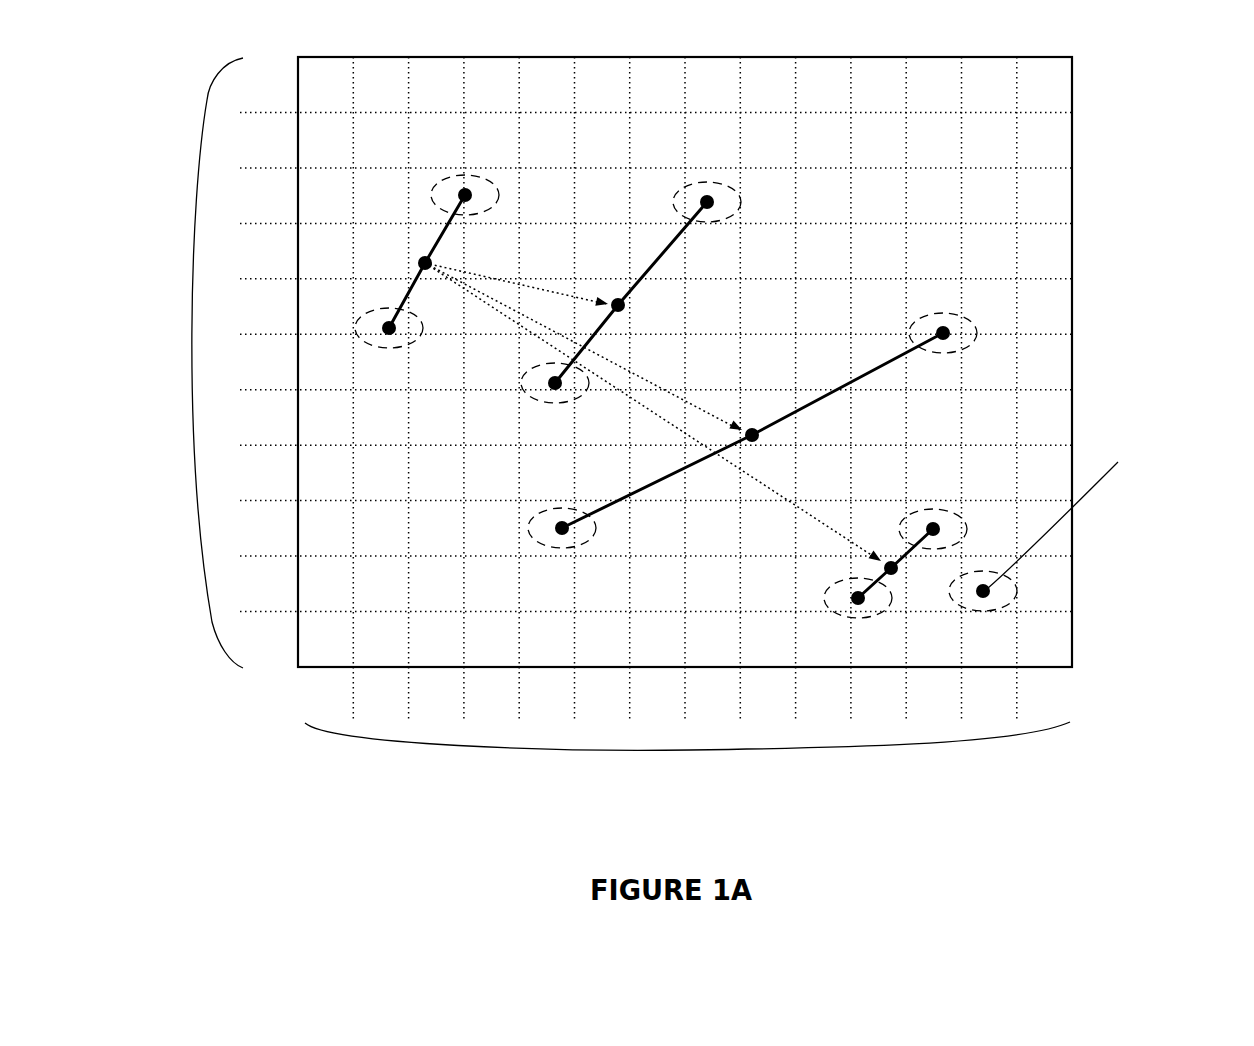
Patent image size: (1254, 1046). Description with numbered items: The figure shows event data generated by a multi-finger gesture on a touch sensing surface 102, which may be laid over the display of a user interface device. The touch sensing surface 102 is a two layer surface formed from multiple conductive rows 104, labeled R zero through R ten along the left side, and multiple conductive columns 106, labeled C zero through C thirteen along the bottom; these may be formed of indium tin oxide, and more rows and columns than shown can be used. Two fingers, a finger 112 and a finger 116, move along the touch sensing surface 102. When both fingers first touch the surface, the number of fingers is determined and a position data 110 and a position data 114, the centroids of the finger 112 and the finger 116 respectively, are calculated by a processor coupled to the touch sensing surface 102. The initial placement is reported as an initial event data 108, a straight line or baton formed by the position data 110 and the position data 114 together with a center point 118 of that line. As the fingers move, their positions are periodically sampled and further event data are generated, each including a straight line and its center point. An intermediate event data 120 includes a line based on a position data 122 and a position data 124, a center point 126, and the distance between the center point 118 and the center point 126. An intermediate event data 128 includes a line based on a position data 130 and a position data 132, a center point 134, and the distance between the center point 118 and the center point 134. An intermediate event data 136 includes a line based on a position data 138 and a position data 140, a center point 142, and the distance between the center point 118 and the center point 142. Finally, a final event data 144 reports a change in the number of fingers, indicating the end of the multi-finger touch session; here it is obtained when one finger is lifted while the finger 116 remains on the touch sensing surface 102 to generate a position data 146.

The touch sensing surface 102 is at (1072, 642).
The conductive rows 104 is at (212, 622).
The conductive columns 106 is at (743, 750).
The initial event data 108 is at (435, 242).
The position data 110 is at (394, 334).
The finger 112 is at (368, 345).
The position data 114 is at (472, 190).
The finger 116 is at (500, 196).
The center point 118 is at (422, 260).
The intermediate event data 120 is at (510, 280).
The position data 122 is at (563, 388).
The position data 124 is at (712, 196).
The center point 126 is at (626, 305).
The intermediate event data 128 is at (660, 393).
The position data 130 is at (570, 533).
The position data 132 is at (946, 326).
The center point 134 is at (752, 430).
The intermediate event data 136 is at (810, 510).
The position data 138 is at (862, 605).
The position data 140 is at (937, 522).
The center point 142 is at (885, 566).
The final event data 144 is at (1089, 502).
The position data 146 is at (990, 594).